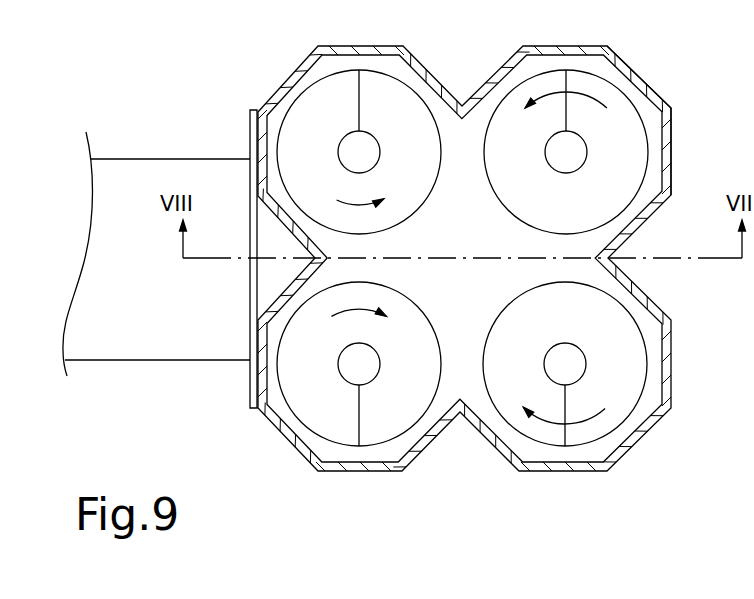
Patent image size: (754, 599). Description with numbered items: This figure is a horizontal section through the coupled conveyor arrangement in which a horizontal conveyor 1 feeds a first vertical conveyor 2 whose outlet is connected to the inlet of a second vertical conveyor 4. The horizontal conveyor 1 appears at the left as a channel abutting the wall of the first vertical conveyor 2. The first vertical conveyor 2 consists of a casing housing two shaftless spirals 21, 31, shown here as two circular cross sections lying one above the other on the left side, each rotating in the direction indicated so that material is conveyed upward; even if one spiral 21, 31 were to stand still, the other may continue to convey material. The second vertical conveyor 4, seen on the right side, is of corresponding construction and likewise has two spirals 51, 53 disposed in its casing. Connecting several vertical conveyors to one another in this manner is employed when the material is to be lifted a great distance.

The horizontal conveyor 1 is at (132, 340).
The vertical conveyor 2 is at (373, 473).
The second vertical conveyor 4 is at (673, 162).
The shaftless spiral 21 is at (320, 95).
The shaftless spiral 31 is at (318, 418).
The spiral 51 is at (615, 95).
The spiral 53 is at (610, 424).